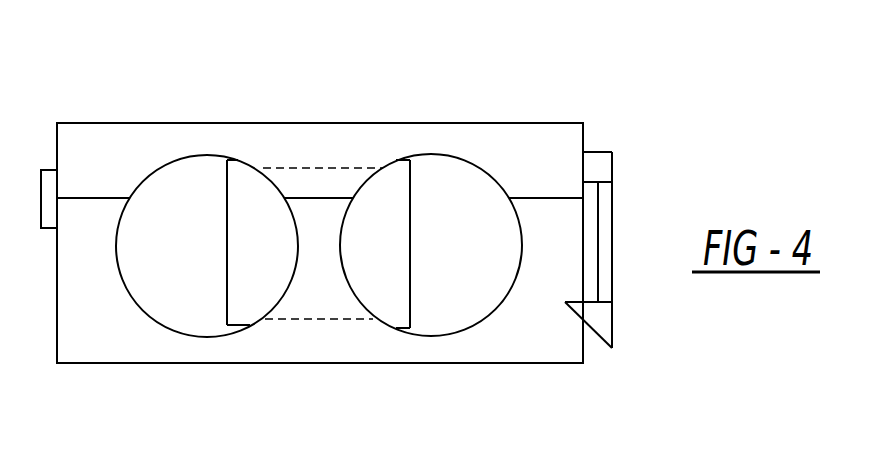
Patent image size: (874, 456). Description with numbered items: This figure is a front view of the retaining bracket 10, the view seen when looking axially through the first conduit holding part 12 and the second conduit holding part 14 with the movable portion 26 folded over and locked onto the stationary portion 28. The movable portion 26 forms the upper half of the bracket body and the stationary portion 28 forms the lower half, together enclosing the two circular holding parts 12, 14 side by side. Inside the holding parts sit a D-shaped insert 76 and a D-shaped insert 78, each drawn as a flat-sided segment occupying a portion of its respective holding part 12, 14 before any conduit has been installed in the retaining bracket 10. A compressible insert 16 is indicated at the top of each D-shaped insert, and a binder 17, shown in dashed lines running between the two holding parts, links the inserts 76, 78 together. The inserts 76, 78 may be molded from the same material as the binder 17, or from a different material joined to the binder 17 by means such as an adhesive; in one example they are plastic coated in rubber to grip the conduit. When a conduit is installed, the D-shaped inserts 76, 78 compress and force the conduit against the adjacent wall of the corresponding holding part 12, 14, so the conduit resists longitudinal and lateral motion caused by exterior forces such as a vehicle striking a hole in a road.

The retaining bracket 10 is at (72, 86).
The first conduit holding part 12 is at (133, 293).
The second conduit holding part 14 is at (515, 278).
The compressible insert 16 is at (226, 182).
The binder 17 is at (333, 319).
The movable portion 26 is at (292, 123).
The stationary portion 28 is at (160, 363).
The D-shaped insert 76 is at (278, 259).
The D-shaped insert 78 is at (388, 256).